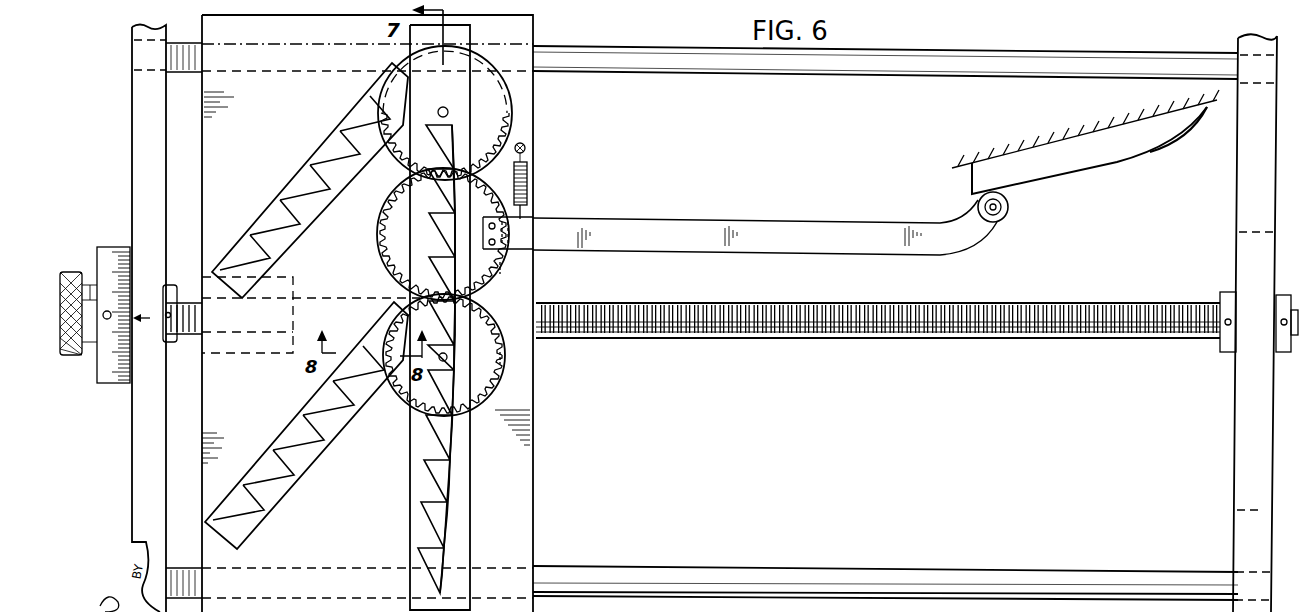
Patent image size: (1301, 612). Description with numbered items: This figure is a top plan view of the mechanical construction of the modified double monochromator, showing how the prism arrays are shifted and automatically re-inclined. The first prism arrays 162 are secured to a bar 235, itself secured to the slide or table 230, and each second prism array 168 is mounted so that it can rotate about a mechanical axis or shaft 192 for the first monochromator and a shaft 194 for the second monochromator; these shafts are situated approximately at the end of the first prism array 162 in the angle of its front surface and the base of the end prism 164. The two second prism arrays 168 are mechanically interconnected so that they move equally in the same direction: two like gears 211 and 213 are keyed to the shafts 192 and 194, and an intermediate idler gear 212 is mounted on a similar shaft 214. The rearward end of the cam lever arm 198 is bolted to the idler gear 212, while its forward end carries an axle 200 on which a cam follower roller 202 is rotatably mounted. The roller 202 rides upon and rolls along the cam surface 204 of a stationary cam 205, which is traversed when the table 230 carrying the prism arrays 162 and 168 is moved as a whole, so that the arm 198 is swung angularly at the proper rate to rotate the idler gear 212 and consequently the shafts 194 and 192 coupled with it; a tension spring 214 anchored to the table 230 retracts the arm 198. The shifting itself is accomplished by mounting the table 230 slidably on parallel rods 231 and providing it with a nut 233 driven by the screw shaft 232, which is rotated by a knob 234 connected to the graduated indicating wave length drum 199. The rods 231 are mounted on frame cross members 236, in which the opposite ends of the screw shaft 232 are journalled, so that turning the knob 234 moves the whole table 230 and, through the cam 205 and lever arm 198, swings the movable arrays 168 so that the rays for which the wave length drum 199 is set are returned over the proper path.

The first prism array 162 is at (432, 224).
The end prism 164 is at (410, 188).
The second prism array 168 is at (298, 180).
The shaft 192 is at (462, 96).
The shaft 194 is at (447, 357).
The cam lever arm 198 is at (810, 232).
The wave length drum 199 is at (110, 257).
The axle 200 is at (995, 210).
The cam follower roller 202 is at (1010, 204).
The cam surface 204 is at (1113, 163).
The stationary cam 205 is at (1172, 128).
The gear 211 is at (512, 133).
The idler gear 212 is at (533, 270).
The gear 213 is at (505, 358).
The tension spring 214 is at (528, 193).
The slide or table 230 is at (533, 493).
The parallel rods 231 is at (933, 68).
The screw shaft 232 is at (823, 330).
The nut 233 is at (265, 358).
The knob 234 is at (70, 272).
The bar 235 is at (463, 527).
The frame cross members 236 is at (138, 438).